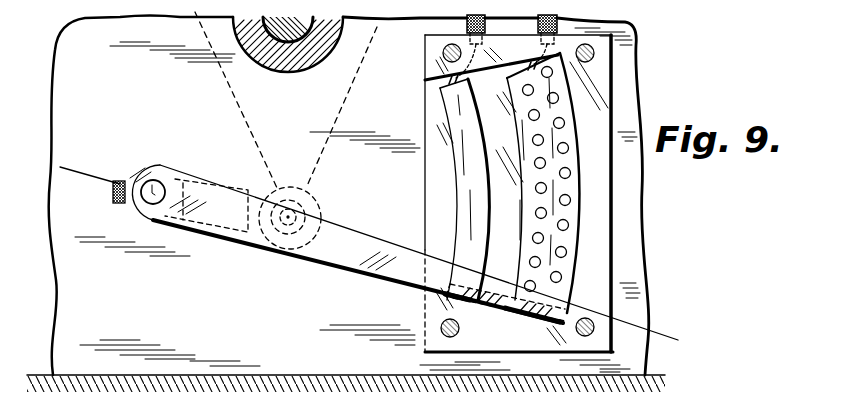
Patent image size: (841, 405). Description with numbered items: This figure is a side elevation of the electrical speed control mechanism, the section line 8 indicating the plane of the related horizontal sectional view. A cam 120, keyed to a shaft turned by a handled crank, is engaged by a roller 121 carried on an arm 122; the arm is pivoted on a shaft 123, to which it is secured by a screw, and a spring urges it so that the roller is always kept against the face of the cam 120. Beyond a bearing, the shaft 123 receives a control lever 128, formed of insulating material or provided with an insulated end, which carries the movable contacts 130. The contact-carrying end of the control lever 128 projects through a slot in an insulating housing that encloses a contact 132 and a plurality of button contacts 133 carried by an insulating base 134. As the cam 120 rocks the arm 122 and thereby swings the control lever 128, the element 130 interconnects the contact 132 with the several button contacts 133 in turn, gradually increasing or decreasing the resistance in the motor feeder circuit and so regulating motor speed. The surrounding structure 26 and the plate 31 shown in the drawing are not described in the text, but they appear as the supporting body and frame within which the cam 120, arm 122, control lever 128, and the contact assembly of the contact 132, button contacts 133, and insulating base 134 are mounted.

The section line 8— 8 is at (79, 166).
The housing body 26 is at (162, 310).
The mounting plate / frame 31 is at (598, 81).
The cam 120 is at (248, 108).
The roller 121 is at (310, 205).
The arm 122 is at (233, 234).
The shaft 123 is at (154, 190).
The control lever 128 is at (332, 255).
The movable contacts 130 is at (497, 293).
The contact 132 is at (470, 211).
The button contacts 133 is at (569, 227).
The insulating base 134 is at (571, 186).